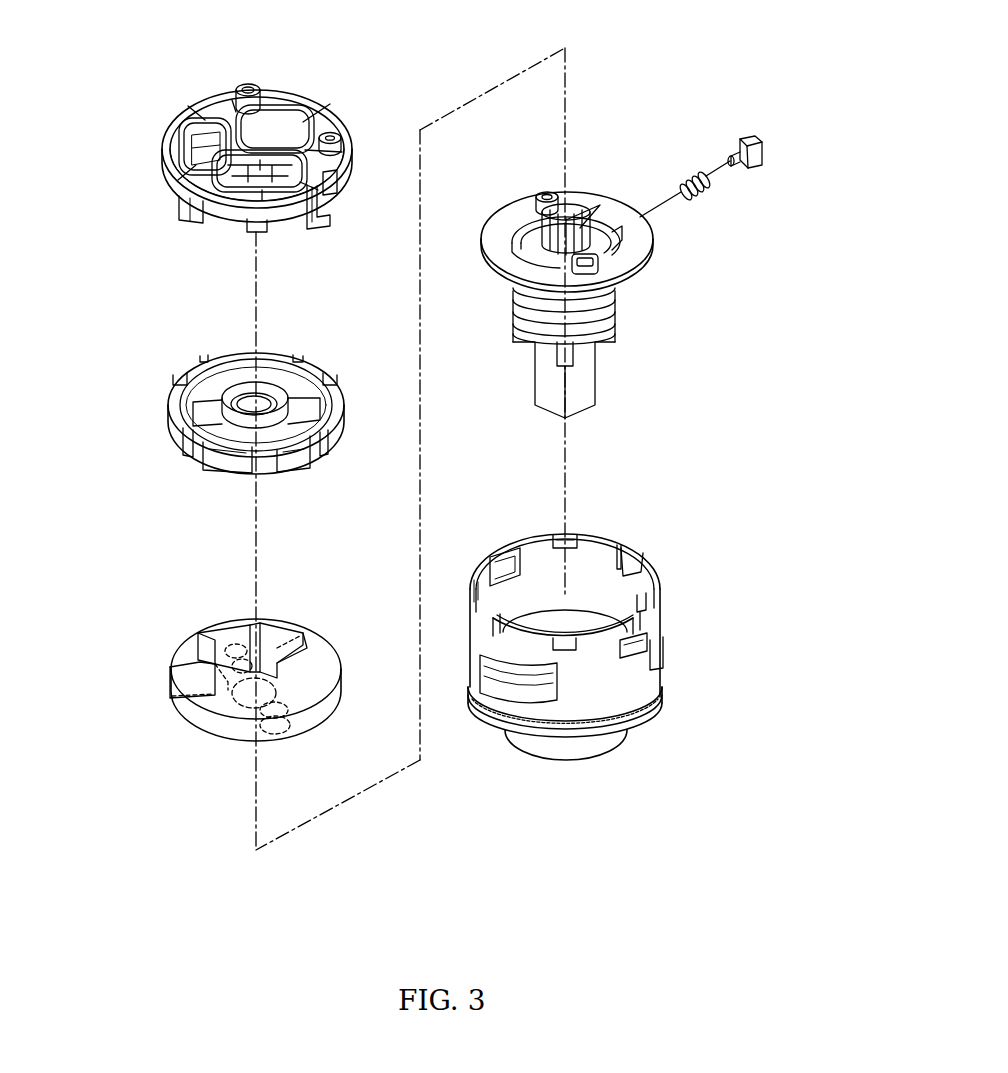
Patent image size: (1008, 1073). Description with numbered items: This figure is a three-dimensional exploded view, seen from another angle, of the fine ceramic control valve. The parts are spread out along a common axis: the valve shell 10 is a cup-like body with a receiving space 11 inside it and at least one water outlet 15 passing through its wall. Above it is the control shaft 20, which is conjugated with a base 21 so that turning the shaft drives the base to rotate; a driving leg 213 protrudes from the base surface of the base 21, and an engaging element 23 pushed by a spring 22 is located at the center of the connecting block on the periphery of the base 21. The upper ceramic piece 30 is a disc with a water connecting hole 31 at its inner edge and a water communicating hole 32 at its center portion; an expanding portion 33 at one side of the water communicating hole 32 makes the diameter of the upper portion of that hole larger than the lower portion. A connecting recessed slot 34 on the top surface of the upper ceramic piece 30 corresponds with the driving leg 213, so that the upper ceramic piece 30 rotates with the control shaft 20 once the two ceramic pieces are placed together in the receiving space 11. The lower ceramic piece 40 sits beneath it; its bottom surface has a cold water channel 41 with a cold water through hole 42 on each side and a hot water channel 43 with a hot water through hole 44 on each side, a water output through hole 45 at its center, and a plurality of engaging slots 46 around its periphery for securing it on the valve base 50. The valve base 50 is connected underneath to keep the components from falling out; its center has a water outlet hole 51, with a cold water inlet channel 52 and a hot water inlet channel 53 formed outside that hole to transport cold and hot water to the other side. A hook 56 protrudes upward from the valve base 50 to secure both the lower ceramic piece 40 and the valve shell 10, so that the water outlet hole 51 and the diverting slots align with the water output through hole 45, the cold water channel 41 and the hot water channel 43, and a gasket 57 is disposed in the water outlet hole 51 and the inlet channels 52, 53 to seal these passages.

The valve shell 10 is at (607, 621).
The receiving space 11 is at (595, 567).
The water outlet 15 is at (664, 636).
The control shaft 20 is at (628, 246).
The base 21 is at (510, 290).
The driving leg 213 is at (543, 192).
The spring 22 is at (698, 190).
The engaging element 23 is at (755, 142).
The upper ceramic piece 30 is at (274, 648).
The water connecting hole 31 is at (193, 648).
The water communicating hole 32 is at (245, 662).
The expanding portion 33 is at (305, 648).
The connecting recessed slot 34 is at (283, 720).
The lower ceramic piece 40 is at (248, 408).
The cold water channel 41 is at (268, 378).
The cold water through hole 42 is at (292, 390).
The hot water channel 43 is at (287, 465).
The hot water through hole 44 is at (323, 432).
The water output through hole 45 is at (252, 400).
The engaging slots 46 is at (187, 437).
The valve base 50 is at (274, 150).
The water outlet hole 51 is at (217, 108).
The cold water inlet channel 52 is at (223, 193).
The hot water inlet channel 53 is at (190, 138).
The hook 56 is at (332, 218).
The gasket 57 is at (240, 132).